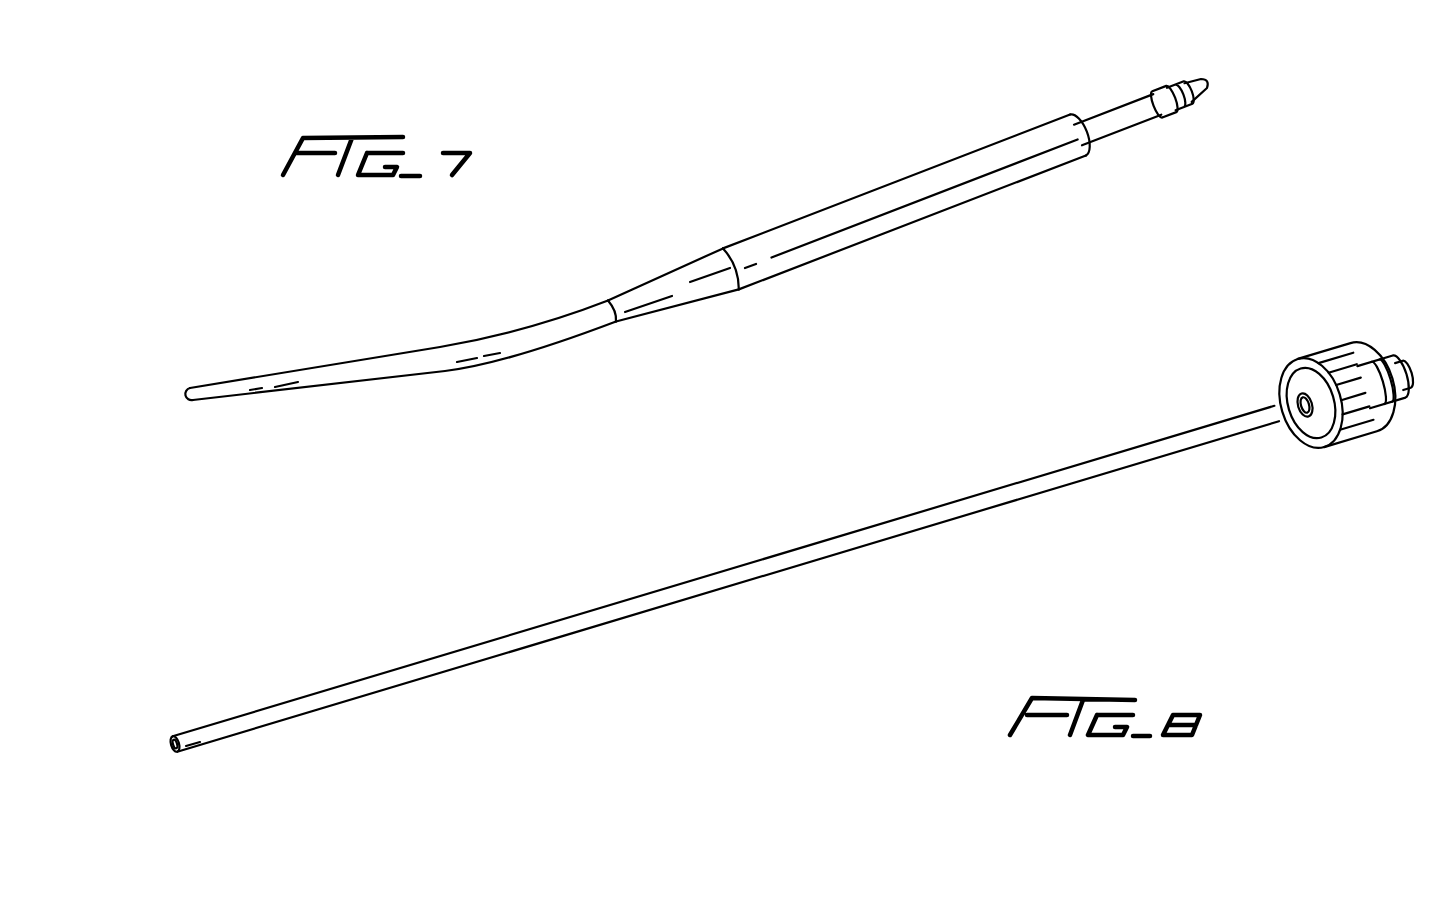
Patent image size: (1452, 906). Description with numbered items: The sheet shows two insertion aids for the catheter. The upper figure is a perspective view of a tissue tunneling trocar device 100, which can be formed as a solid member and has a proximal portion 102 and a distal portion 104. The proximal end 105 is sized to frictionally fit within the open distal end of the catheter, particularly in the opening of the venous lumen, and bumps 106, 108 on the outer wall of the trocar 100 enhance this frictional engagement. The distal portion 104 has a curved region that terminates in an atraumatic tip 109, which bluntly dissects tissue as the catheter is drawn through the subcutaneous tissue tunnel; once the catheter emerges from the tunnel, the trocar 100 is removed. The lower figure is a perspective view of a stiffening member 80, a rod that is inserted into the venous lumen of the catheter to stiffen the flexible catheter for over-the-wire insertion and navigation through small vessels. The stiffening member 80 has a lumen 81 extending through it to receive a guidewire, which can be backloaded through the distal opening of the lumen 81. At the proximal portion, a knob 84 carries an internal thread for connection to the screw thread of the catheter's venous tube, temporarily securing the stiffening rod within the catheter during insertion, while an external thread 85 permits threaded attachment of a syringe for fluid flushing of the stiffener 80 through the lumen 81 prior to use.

In FIG. 7, the tissue tunneling trocar device 100 is at (848, 168).
In FIG. 7, the proximal portion 102 is at (1050, 88).
In FIG. 7, the distal portion 104 is at (408, 424).
In FIG. 7, the proximal end 105 is at (1238, 117).
In FIG. 7, the bump 106 is at (1172, 113).
In FIG. 7, the bump 108 is at (1190, 108).
In FIG. 7, the atraumatic tip 109 is at (192, 402).
In FIG. 8, the stiffening member 80 is at (888, 587).
In FIG. 8, the lumen 81 is at (169, 754).
In FIG. 8, the knob 84 is at (1340, 449).
In FIG. 8, the external thread 85 is at (1383, 352).